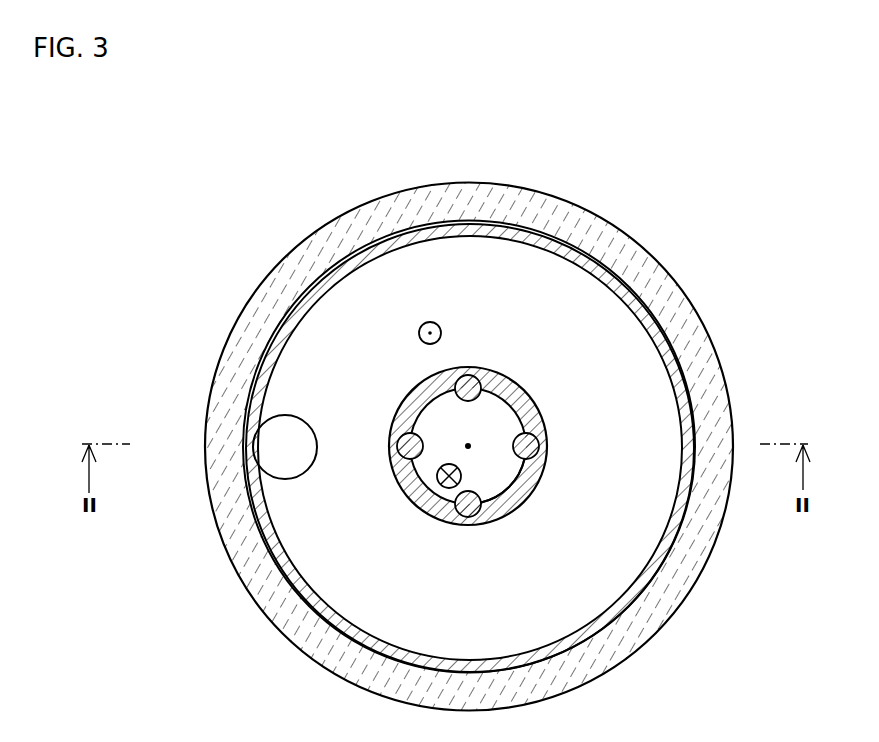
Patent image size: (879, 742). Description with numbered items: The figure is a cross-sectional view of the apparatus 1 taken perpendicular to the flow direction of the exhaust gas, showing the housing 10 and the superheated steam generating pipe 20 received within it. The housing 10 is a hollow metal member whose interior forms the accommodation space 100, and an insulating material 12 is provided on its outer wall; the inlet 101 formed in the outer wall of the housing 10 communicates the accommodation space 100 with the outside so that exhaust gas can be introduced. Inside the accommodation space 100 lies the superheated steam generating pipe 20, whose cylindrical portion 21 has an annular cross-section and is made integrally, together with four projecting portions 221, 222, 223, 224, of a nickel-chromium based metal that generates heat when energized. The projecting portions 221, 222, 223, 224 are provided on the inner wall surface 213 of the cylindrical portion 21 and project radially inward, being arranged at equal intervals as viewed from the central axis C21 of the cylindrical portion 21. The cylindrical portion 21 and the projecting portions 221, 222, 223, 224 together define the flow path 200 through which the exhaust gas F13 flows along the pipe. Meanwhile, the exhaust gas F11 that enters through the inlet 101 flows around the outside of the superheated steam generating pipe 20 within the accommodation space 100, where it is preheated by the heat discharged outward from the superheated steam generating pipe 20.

The endoscope insertion portion 1 is at (642, 202).
The housing 10 is at (258, 526).
The accommodation space 100 is at (327, 352).
The inlet 101 is at (280, 452).
The insulating material 12 is at (232, 393).
The superheated steam generating pipe 20 is at (550, 494).
The cylindrical portion 21 is at (425, 512).
The flow path 200 is at (433, 413).
The inner wall surface 213 is at (498, 489).
The projecting portion 221 is at (410, 447).
The projecting portion 222 is at (468, 389).
The projecting portion 223 is at (545, 452).
The projecting portion 224 is at (468, 506).
The central axis C21 is at (472, 444).
The exhaust gas F11 is at (418, 334).
The exhaust gas F13 is at (437, 477).